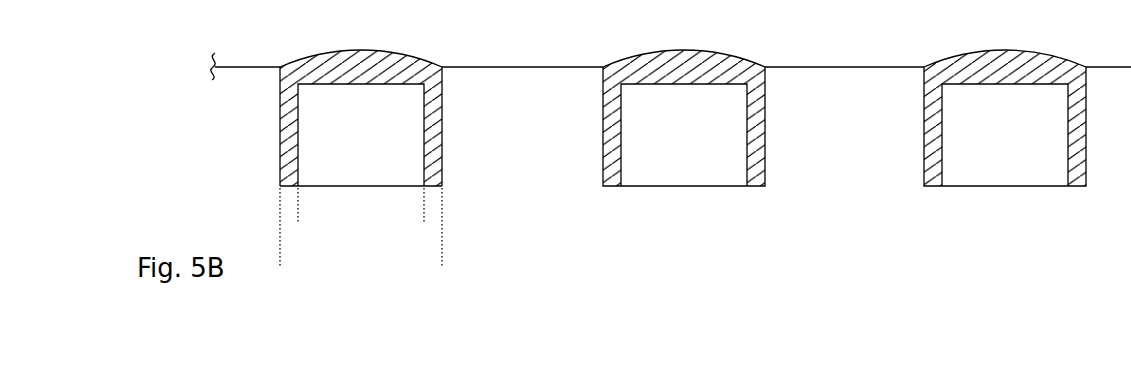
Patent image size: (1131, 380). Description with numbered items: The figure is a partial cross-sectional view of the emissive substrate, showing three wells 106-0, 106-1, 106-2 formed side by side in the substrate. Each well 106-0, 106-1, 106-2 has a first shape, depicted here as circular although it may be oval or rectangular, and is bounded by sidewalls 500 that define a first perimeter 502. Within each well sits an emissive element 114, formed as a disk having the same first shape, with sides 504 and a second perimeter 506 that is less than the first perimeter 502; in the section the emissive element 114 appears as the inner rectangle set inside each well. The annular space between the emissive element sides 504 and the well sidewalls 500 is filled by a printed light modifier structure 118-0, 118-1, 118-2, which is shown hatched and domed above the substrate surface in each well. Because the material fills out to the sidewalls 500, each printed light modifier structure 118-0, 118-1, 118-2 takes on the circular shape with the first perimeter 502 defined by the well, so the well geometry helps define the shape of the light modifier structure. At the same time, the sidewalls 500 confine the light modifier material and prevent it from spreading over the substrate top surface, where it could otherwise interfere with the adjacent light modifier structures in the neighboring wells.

The well 106-0 is at (309, 48).
The well 106-1 is at (622, 48).
The well 106-2 is at (948, 48).
The printed light modifier structure 118-0 is at (427, 66).
The printed light modifier structure 118-1 is at (752, 66).
The printed light modifier structure 118-2 is at (1071, 66).
The emissive element 114 is at (382, 149).
The sidewalls 500 is at (446, 129).
The first perimeter 502 is at (423, 207).
The sides 504 is at (296, 135).
The second perimeter 506 is at (441, 254).